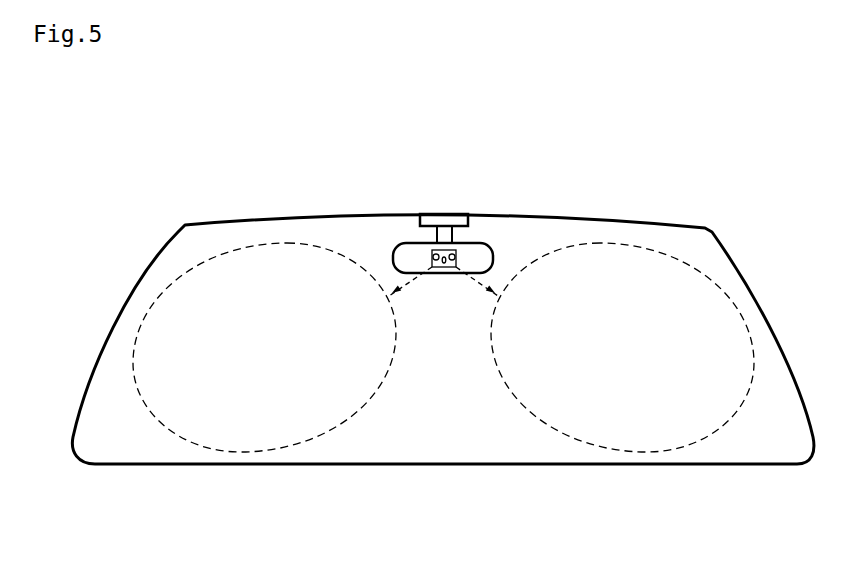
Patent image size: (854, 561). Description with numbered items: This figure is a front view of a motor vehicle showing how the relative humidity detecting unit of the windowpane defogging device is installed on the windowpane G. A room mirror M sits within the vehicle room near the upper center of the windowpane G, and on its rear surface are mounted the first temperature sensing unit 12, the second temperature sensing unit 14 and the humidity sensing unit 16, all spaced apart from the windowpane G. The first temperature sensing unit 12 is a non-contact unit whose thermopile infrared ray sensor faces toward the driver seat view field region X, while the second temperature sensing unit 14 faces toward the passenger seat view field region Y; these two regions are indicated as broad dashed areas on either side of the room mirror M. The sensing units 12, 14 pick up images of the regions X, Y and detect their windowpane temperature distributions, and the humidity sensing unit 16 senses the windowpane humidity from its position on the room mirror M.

The windowpane G is at (677, 243).
The room mirror M is at (403, 247).
The driver seat view field region X is at (587, 243).
The passenger seat view field region Y is at (278, 243).
The first temperature sensing unit 12 is at (467, 247).
The second temperature sensing unit 14 is at (428, 247).
The humidity sensing unit 16 is at (444, 267).